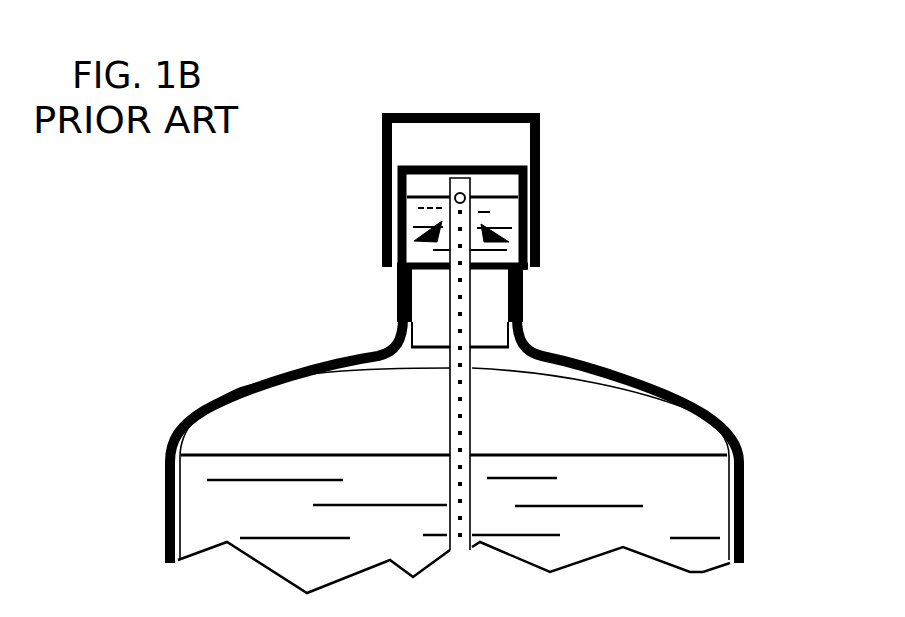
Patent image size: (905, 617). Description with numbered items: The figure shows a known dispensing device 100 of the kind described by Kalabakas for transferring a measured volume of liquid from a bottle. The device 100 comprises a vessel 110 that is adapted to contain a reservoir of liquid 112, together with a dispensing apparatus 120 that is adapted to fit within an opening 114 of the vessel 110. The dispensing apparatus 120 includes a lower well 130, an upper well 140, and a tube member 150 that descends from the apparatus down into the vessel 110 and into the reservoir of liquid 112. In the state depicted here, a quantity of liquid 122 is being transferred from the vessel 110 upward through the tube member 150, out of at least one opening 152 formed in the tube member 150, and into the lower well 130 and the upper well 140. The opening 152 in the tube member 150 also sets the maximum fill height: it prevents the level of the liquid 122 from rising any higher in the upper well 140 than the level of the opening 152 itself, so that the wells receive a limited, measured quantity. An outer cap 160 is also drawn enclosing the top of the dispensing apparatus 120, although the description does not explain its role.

The dispensing container assembly (prior art) 100 is at (728, 163).
The container body 110 is at (737, 442).
The liquid product 112 is at (713, 522).
The container inner wall surface 114 is at (505, 357).
The closure / inner cap 120 is at (545, 278).
The neck inner passage 122 is at (488, 317).
The container neck 130 is at (410, 307).
The valve region 140 is at (425, 223).
The dip tube 150 is at (463, 418).
The dip tube orifice 152 is at (466, 195).
The overcap 160 is at (472, 133).